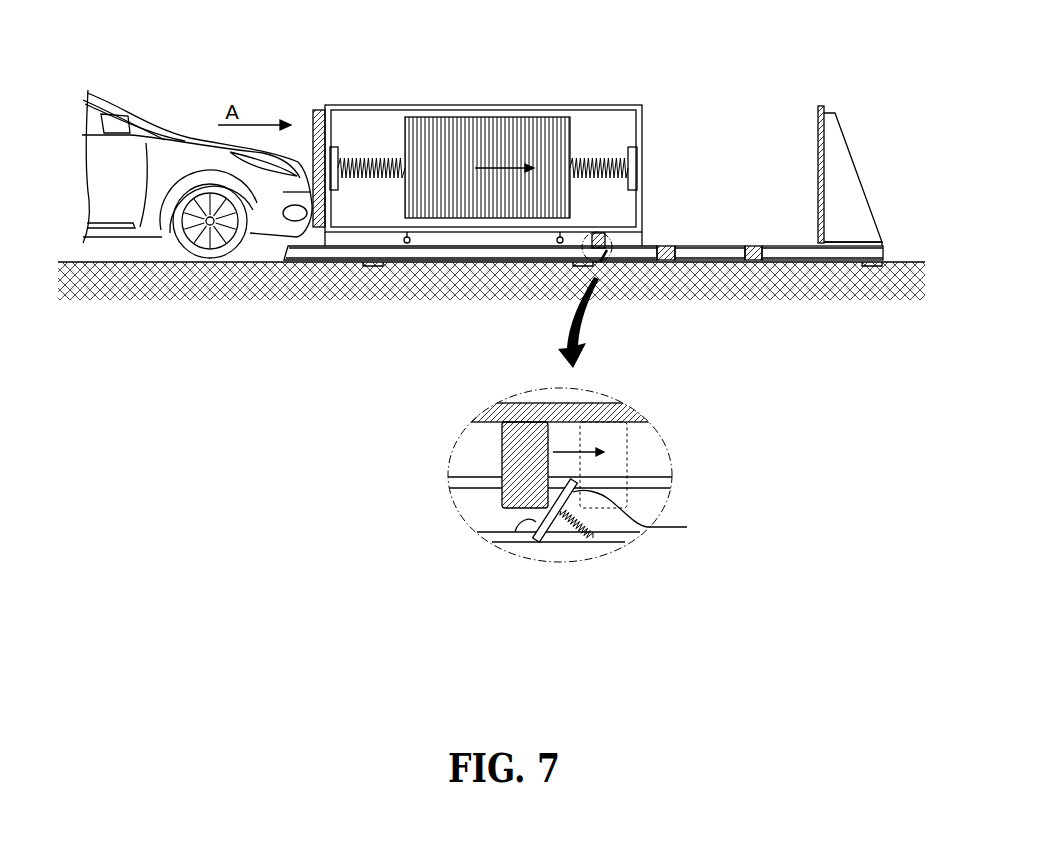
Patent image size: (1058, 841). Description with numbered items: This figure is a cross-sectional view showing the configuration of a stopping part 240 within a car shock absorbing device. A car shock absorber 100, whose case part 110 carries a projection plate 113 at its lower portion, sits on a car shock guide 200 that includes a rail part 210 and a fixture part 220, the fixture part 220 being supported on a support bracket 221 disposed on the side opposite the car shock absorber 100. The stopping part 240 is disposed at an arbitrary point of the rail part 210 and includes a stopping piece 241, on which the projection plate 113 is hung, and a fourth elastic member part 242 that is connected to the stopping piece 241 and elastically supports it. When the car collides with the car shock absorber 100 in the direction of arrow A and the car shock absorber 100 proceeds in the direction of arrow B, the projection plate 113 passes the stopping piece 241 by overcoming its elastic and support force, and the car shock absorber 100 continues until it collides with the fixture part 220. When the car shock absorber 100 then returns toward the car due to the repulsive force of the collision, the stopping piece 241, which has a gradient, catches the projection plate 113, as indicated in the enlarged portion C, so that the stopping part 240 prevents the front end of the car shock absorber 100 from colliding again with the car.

The car shock absorber 100 is at (609, 99).
The case part 110 is at (508, 105).
The projection plate 113 is at (580, 243).
The car shock guide 200 is at (862, 138).
The rail part 210 is at (690, 246).
The fixture part 220 is at (820, 105).
The support bracket 221 is at (848, 182).
The stopping part 240 is at (593, 459).
The stopping piece 241 is at (522, 523).
The fourth elastic member part 242 is at (562, 528).